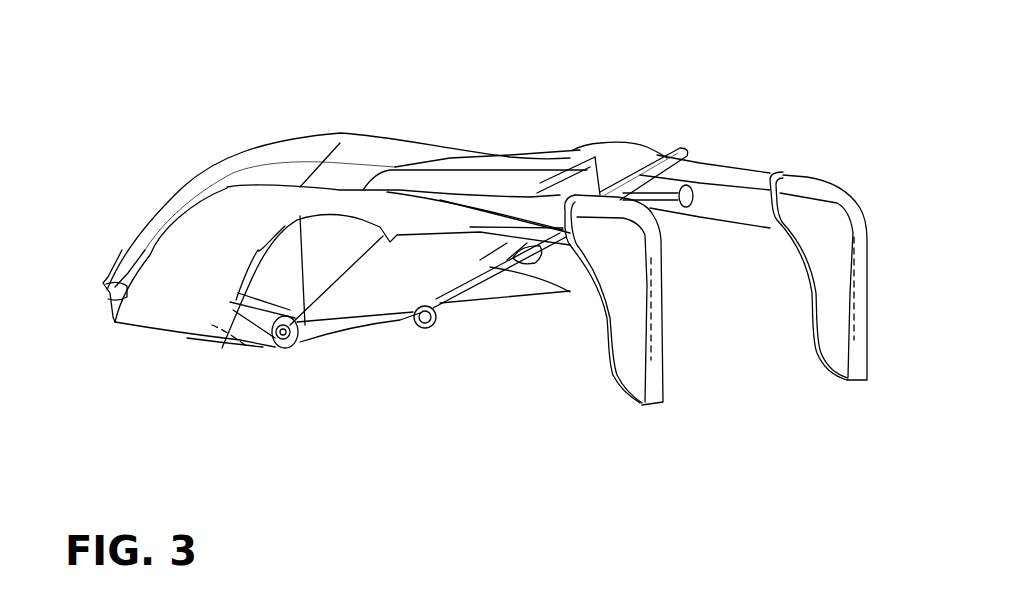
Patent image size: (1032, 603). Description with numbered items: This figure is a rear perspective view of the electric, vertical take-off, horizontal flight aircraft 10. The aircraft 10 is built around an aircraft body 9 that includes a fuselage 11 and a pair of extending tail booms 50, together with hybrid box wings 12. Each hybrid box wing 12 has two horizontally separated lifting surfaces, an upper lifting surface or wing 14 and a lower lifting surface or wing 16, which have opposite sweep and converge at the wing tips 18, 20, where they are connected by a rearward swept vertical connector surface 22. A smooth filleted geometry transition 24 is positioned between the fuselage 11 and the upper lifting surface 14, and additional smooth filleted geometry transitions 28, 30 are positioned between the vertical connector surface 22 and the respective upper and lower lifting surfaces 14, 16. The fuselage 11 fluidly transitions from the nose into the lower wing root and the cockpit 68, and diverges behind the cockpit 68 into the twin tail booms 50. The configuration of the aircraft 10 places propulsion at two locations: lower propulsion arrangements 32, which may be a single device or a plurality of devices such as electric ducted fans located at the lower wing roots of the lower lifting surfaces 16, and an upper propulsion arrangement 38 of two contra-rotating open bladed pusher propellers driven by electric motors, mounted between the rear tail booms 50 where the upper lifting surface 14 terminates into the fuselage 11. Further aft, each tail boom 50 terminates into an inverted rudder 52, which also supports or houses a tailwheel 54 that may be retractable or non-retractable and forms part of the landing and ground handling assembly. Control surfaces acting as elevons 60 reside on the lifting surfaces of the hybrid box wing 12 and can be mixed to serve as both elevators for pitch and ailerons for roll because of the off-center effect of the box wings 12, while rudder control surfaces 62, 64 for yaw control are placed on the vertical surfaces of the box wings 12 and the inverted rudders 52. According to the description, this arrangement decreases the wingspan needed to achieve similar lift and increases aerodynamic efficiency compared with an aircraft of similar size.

The aircraft body 9 is at (438, 148).
The aircraft 10 is at (590, 88).
The fuselage 11 is at (477, 160).
The hybrid box wings 12 is at (343, 188).
The upper lifting surface 14 is at (373, 205).
The lower lifting surface 16 is at (258, 352).
The wing tip 18 is at (300, 184).
The wing tip 20 is at (222, 348).
The vertical connector surface 22 is at (146, 259).
The smooth filleted geometry transition 24 is at (493, 200).
The smooth filleted geometry transition 28 is at (223, 181).
The smooth filleted geometry transition 30 is at (133, 331).
The lower propulsion arrangement 32 is at (289, 352).
The upper propulsion arrangement 38 is at (666, 145).
The tail boom 50 is at (498, 198).
The inverted rudder 52 is at (620, 315).
The tailwheel 54 is at (646, 405).
The elevon 60 is at (245, 345).
The rudder control surface 62 is at (106, 285).
The rudder control surface 64 is at (657, 332).
The cockpit 68 is at (234, 164).